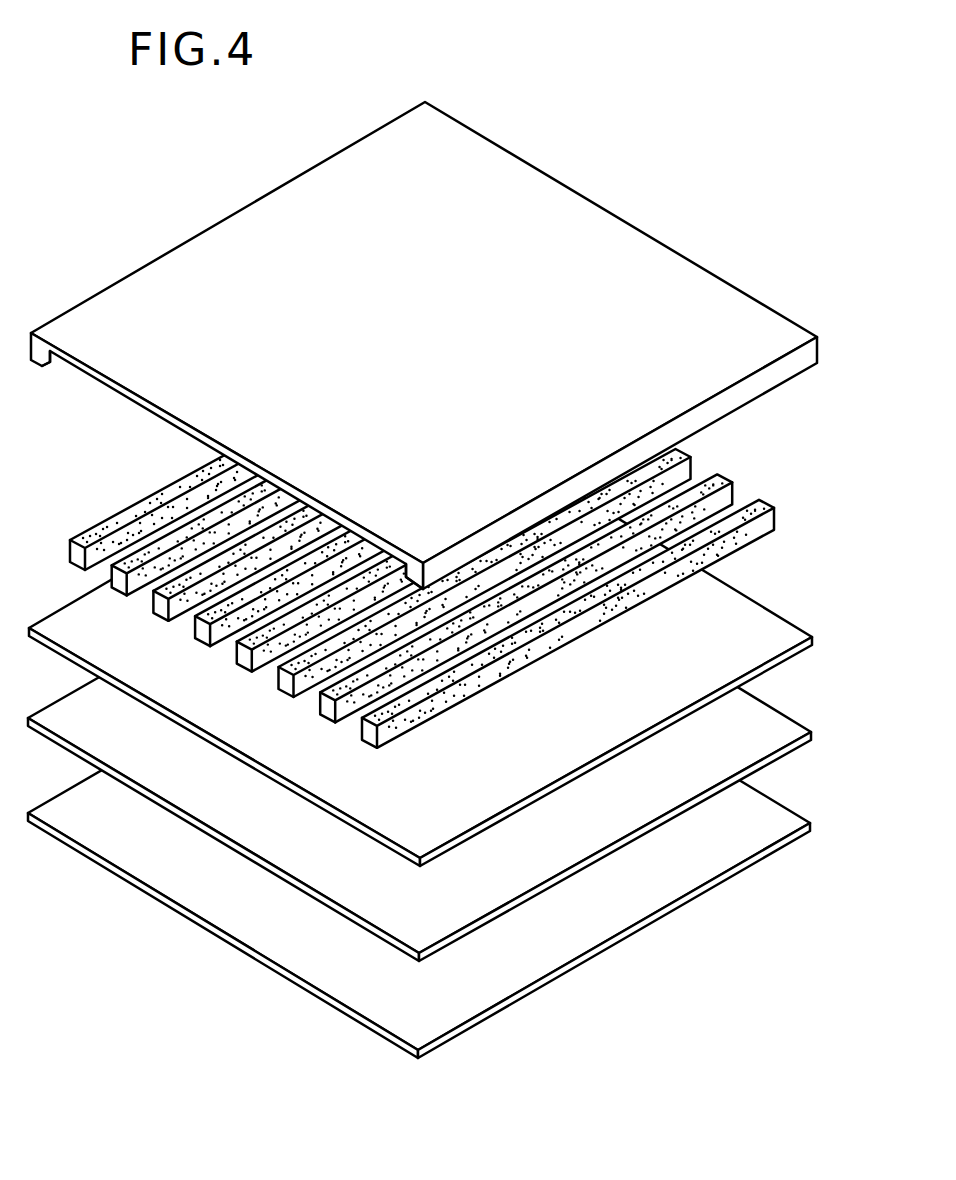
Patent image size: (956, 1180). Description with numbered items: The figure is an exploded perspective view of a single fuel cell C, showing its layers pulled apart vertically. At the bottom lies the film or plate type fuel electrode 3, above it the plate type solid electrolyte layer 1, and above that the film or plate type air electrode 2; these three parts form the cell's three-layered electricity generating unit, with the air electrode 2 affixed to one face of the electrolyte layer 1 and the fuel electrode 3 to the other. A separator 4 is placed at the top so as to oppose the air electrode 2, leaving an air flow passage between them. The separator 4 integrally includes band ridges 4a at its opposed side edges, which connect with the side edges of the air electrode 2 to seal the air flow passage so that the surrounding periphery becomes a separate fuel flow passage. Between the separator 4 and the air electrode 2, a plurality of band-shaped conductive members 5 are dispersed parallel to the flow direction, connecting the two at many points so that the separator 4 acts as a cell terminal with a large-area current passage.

The solid electrolyte layer 1 is at (797, 727).
The air electrode 2 is at (789, 618).
The fuel electrode 3 is at (800, 813).
The separator 4 is at (567, 185).
The band ridges 4a is at (43, 364).
The band-shaped conductive members 5 is at (113, 590).
The fuel cell C is at (708, 155).